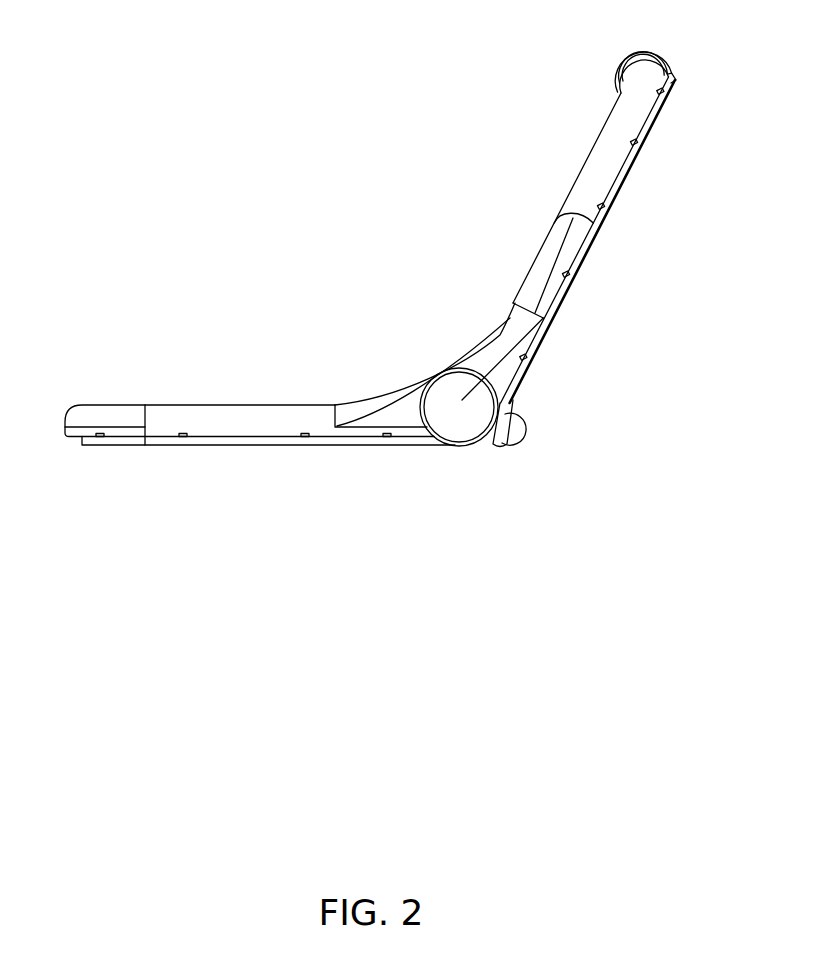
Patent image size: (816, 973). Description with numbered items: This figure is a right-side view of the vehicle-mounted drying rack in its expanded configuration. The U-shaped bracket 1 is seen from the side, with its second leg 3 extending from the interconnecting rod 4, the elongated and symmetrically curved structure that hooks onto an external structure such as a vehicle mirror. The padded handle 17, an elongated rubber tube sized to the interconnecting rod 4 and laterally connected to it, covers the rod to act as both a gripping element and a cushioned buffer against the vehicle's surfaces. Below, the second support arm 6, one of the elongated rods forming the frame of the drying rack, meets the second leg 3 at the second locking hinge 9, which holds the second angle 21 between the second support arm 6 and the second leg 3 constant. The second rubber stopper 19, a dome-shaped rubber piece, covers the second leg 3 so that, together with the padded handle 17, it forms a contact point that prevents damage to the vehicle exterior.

The U-shaped bracket 1 is at (552, 150).
The second leg 3 is at (515, 320).
The interconnecting rod 4 is at (625, 108).
The second support arm 6 is at (230, 422).
The second locking hinge 9 is at (477, 470).
The padded handle 17 is at (673, 62).
The second rubber stopper 19 is at (515, 438).
The second angle 21 is at (533, 253).